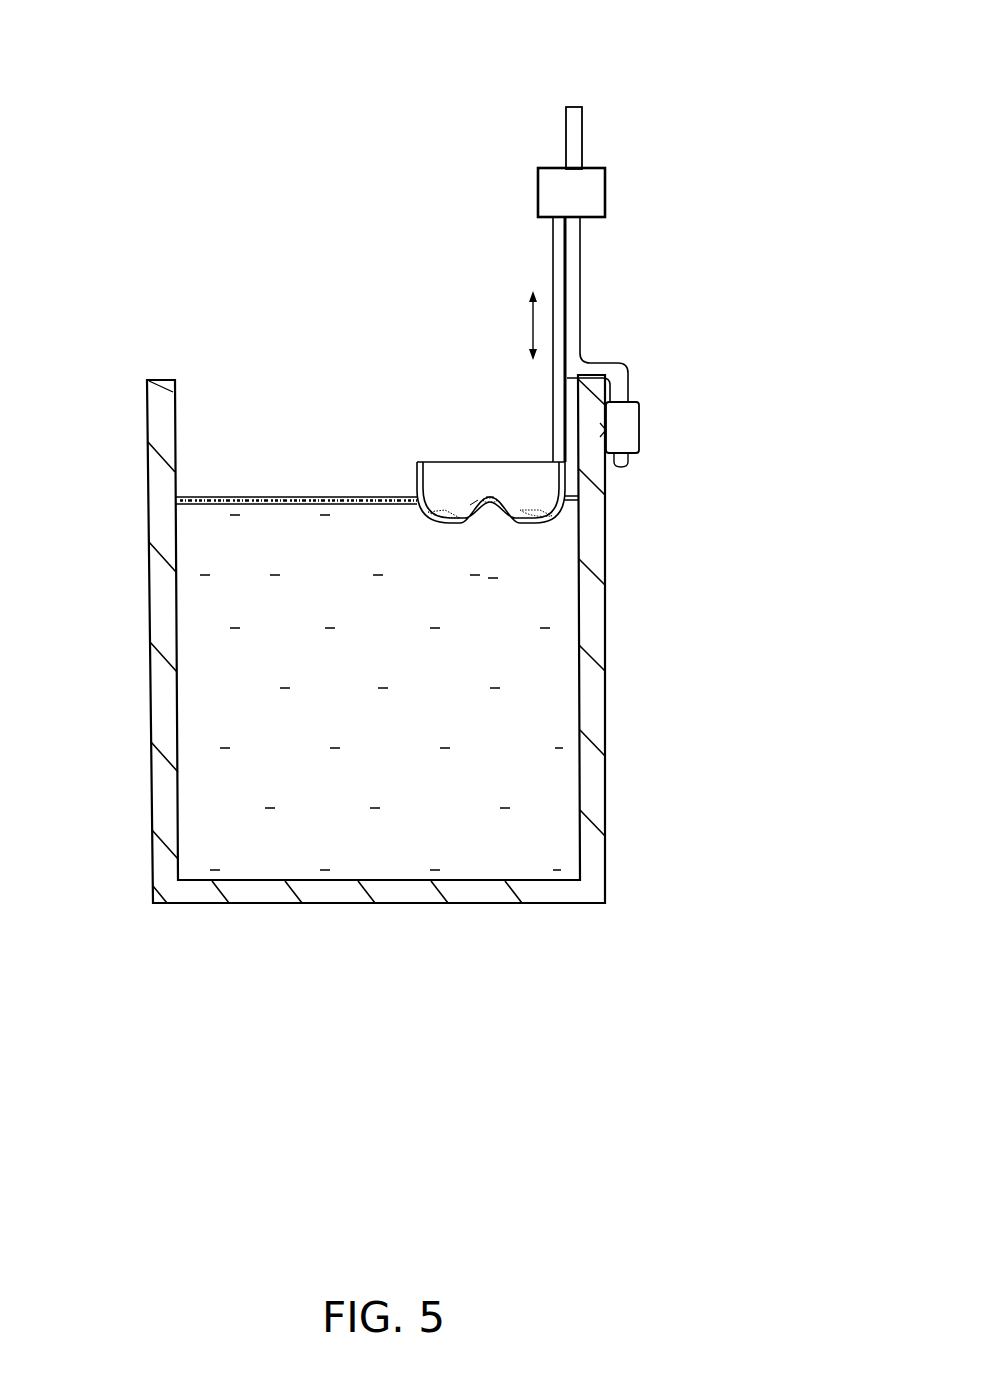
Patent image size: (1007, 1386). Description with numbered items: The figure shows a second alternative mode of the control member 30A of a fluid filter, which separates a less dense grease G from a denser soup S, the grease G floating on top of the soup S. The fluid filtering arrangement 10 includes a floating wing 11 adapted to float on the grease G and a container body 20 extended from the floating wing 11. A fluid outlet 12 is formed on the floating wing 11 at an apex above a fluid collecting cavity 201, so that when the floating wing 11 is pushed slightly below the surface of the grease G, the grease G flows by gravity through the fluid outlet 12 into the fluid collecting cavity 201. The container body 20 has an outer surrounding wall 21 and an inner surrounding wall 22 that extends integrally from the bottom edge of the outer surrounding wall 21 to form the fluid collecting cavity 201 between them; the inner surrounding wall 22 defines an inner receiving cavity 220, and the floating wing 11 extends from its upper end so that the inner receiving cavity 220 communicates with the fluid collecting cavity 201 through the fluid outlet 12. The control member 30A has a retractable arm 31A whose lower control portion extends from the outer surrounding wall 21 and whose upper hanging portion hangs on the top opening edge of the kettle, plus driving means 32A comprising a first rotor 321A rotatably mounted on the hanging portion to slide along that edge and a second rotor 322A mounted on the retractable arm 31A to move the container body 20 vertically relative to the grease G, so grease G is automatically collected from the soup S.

The fluid filtering arrangement 10 is at (432, 292).
The floating wing 11 is at (478, 496).
The fluid outlet 12 is at (493, 490).
The container body 20 is at (313, 403).
The fluid collecting cavity 201 is at (447, 490).
The outer surrounding wall 21 is at (422, 477).
The inner surrounding wall 22 is at (517, 527).
The inner receiving cavity 220 is at (493, 514).
The control member 30A is at (745, 185).
The retractable arm 31A is at (558, 268).
The driving means 32A is at (660, 388).
The first rotor 321A is at (601, 425).
The second rotor 322A is at (592, 187).
The grease G is at (254, 497).
The soup S is at (228, 550).